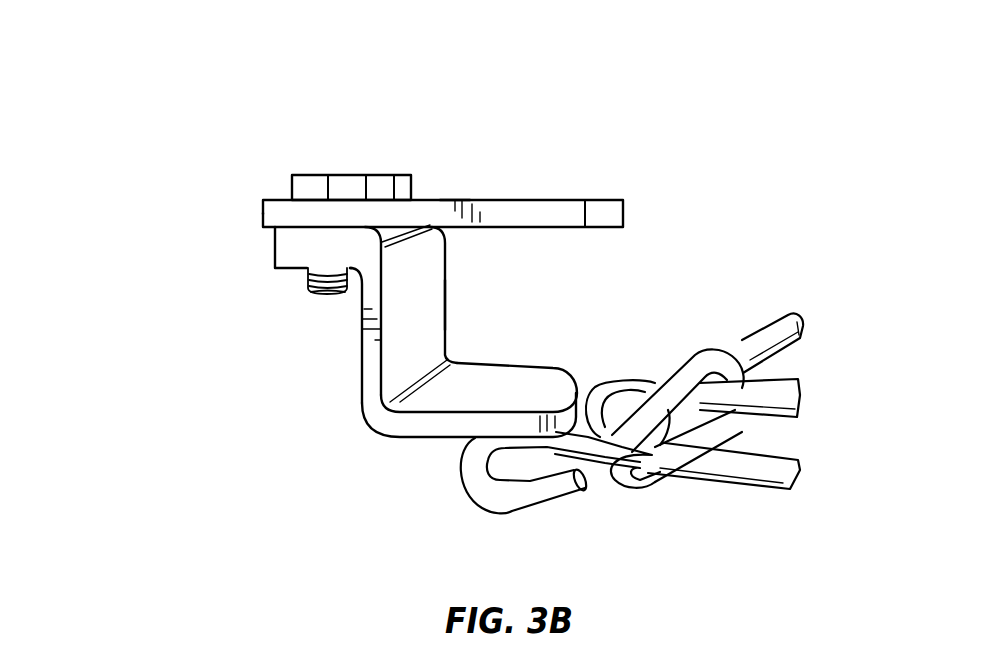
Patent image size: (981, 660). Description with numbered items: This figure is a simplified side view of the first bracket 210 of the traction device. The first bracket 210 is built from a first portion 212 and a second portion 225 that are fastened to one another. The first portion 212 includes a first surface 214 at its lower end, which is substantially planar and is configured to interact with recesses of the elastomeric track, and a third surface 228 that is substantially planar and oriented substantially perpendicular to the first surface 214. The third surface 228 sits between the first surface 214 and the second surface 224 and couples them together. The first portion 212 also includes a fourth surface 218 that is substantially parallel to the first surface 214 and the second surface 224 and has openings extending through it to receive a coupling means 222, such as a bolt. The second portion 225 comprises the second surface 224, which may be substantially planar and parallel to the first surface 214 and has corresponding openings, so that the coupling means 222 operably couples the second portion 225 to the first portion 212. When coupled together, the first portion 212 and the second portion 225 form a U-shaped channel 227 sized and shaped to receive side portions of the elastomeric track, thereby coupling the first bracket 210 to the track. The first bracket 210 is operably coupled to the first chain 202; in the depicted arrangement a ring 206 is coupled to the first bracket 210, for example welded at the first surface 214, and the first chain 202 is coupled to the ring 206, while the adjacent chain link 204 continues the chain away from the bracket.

The first bracket 210 is at (157, 102).
The first portion 212 is at (381, 374).
The first surface 214 is at (440, 425).
The fourth surface 218 is at (290, 270).
The coupling means 222 is at (310, 190).
The second surface 224 is at (552, 200).
The second portion 225 is at (453, 158).
The U-shaped channel 227 is at (536, 319).
The third surface 228 is at (365, 362).
The first chain 202 is at (785, 330).
The chain link 204 is at (763, 462).
The ring 206 is at (613, 447).